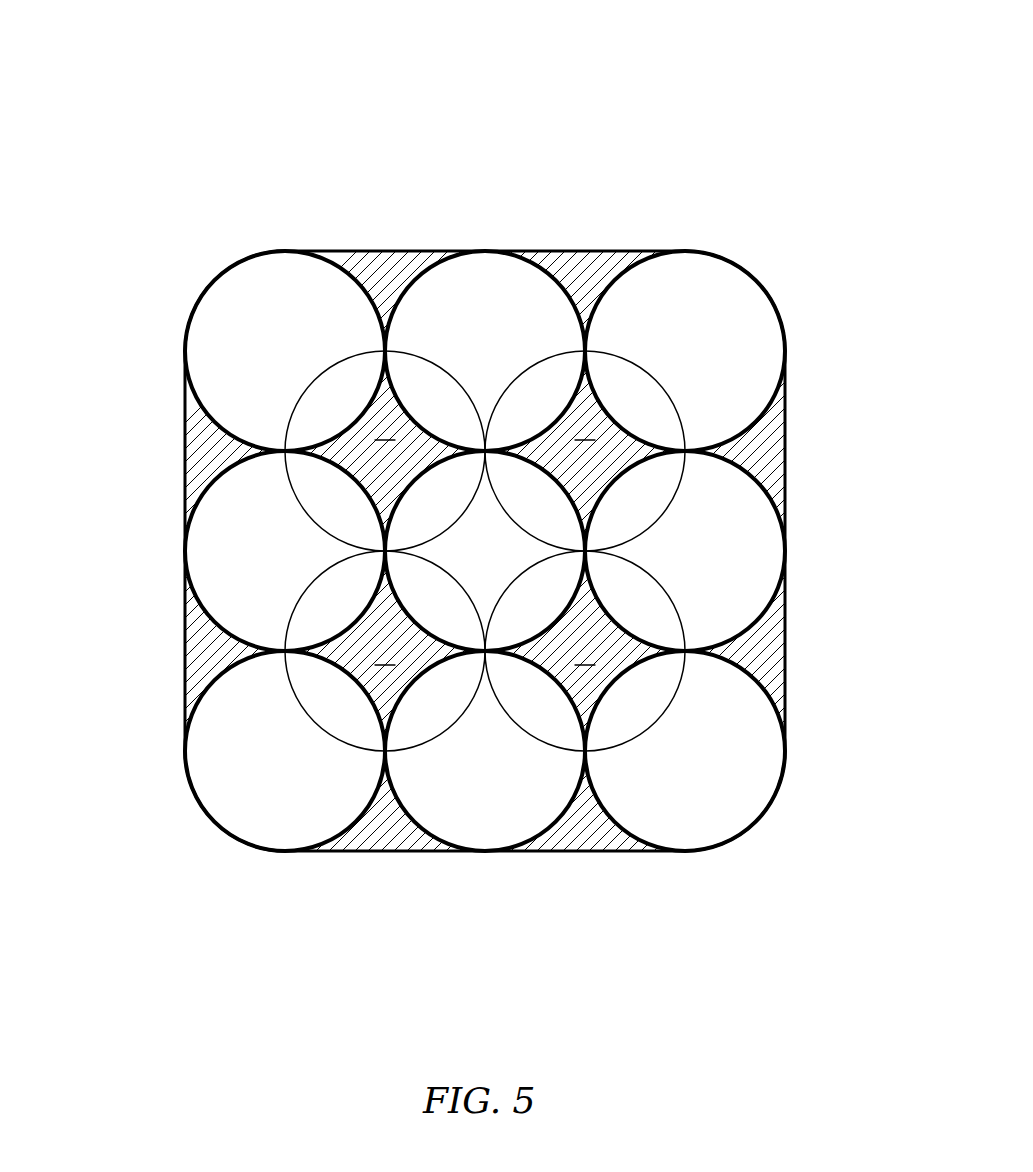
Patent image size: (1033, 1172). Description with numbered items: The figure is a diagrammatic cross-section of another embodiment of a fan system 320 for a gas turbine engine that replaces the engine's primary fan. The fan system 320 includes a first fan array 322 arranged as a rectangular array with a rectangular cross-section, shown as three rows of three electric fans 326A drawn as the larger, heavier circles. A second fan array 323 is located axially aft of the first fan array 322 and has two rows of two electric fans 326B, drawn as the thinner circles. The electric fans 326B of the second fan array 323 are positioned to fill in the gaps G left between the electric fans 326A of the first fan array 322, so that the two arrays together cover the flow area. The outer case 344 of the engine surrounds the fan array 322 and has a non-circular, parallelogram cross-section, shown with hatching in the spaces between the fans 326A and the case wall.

The fan system 320 is at (484, 586).
The first fan array 322 is at (158, 406).
The second fan array 323 is at (862, 502).
The outer case 344 is at (790, 632).
The electric fans of the first fan array 326A is at (653, 262).
The electric fans of the second fan array 326B is at (450, 363).
The gaps G is at (485, 540).